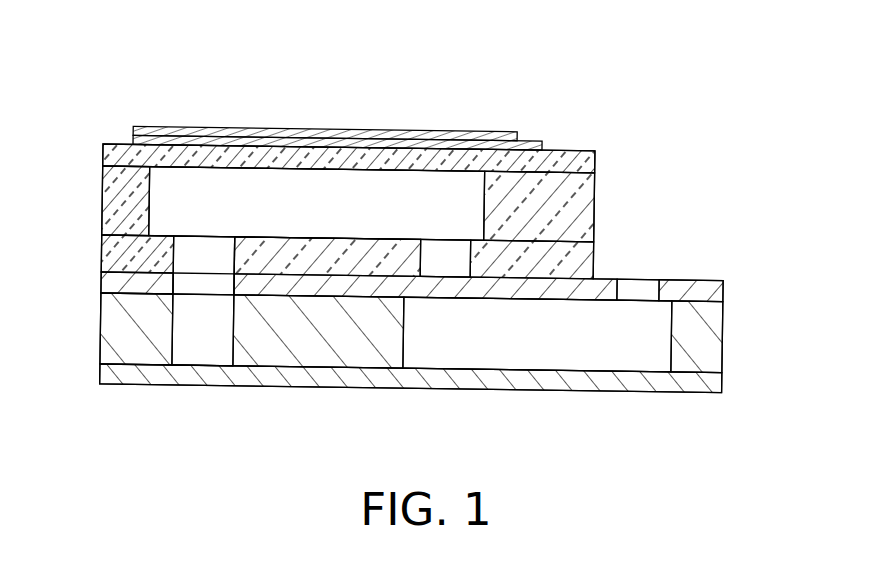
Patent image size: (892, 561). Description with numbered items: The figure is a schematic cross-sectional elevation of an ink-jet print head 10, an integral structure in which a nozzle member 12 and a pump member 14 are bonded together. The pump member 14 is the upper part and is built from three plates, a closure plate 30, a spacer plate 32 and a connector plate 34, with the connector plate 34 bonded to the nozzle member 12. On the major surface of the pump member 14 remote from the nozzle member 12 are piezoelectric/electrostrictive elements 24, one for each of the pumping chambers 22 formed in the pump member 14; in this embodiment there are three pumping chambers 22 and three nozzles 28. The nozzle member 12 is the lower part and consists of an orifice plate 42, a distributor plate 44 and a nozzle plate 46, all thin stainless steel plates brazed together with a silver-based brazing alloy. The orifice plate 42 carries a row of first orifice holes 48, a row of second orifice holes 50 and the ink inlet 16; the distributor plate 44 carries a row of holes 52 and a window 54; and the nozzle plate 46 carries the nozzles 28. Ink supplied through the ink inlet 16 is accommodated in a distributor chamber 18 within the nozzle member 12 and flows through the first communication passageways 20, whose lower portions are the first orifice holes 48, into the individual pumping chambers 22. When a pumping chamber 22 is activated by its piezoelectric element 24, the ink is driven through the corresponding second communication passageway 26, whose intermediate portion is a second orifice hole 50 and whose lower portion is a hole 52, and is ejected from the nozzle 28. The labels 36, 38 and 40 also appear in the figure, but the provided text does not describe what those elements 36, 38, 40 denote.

The ink-jet print head 10 is at (122, 85).
The nozzle member 12 is at (782, 288).
The pump member 14 is at (673, 115).
The ink inlet 16 is at (643, 290).
The distributor chamber 18 is at (571, 354).
The first communication passageways 20 is at (448, 252).
The pumping chambers 22 is at (334, 219).
The piezoelectric/electrostrictive elements 24 is at (493, 121).
The second communication passageways 26 is at (188, 256).
The nozzles 28 is at (203, 373).
The closure plate 30 is at (581, 153).
The spacer plate 32 is at (583, 198).
The connector plate 34 is at (585, 262).
The side wall 36 is at (151, 189).
The upper surface of layer 34 38 is at (432, 240).
The edge of passage 40 is at (232, 248).
The orifice plate 42 is at (717, 293).
The distributor plate 44 is at (710, 344).
The nozzle plate 46 is at (713, 383).
The first orifice holes 48 is at (448, 282).
The second orifice holes 50 is at (179, 277).
The holes 52 is at (179, 340).
The window 54 is at (667, 354).